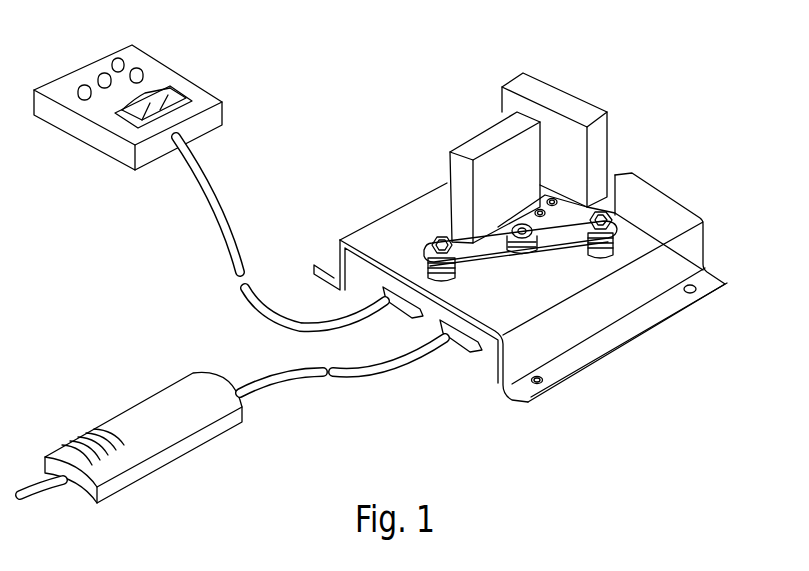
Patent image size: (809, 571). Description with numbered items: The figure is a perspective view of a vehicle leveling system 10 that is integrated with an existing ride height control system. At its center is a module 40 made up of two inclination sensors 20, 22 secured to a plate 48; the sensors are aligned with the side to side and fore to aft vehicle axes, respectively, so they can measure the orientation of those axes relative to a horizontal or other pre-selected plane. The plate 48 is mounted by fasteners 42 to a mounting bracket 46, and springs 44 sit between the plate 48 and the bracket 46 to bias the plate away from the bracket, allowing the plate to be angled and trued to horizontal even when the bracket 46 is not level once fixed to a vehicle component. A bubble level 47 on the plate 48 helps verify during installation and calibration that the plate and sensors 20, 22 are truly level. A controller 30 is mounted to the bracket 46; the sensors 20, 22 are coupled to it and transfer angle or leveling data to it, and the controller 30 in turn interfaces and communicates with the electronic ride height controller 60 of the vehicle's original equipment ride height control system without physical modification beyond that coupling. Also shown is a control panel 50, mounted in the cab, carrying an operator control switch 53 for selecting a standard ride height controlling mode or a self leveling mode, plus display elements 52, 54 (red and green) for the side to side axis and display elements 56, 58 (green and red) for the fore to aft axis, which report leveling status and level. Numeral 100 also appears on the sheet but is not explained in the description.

The leveling system 10 is at (517, 455).
The inclination sensor 20 is at (587, 103).
The inclination sensor 22 is at (492, 138).
The controller 30 is at (490, 353).
The module 40 is at (740, 236).
The fasteners 42 is at (608, 214).
The springs 44 is at (613, 253).
The mounting bracket 46 is at (567, 384).
The bubble level 47 is at (528, 243).
The plate 48 is at (428, 237).
The control panel 50 is at (86, 145).
The display element 52 is at (117, 58).
The operator control switch 53 is at (170, 95).
The display element 54 is at (136, 69).
The display element 56 is at (103, 75).
The display element 58 is at (83, 86).
The electronic ride height controller 60 is at (200, 447).
The vehicle 100 is at (647, 570).